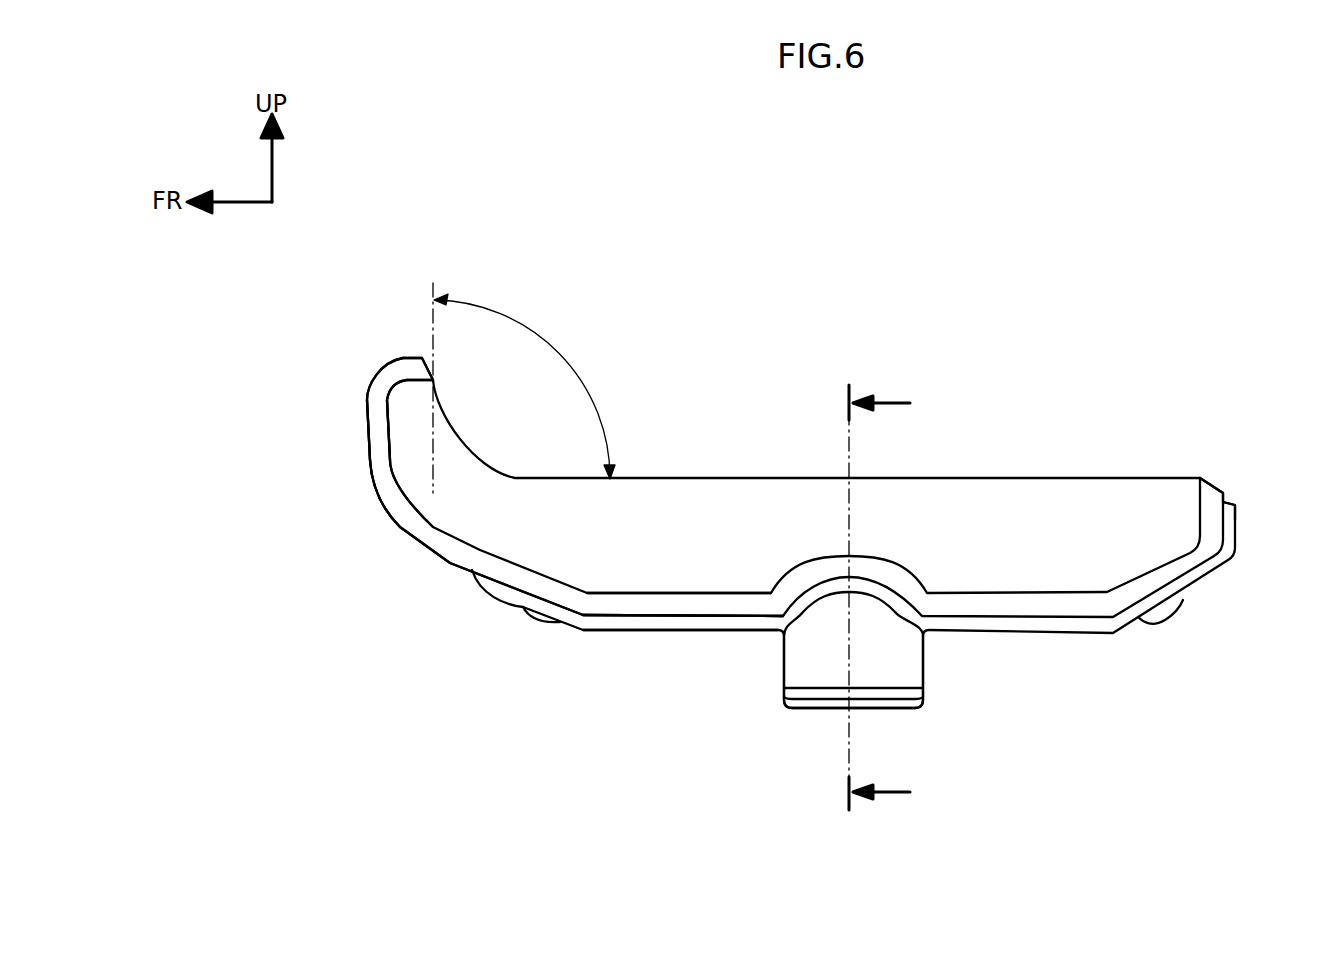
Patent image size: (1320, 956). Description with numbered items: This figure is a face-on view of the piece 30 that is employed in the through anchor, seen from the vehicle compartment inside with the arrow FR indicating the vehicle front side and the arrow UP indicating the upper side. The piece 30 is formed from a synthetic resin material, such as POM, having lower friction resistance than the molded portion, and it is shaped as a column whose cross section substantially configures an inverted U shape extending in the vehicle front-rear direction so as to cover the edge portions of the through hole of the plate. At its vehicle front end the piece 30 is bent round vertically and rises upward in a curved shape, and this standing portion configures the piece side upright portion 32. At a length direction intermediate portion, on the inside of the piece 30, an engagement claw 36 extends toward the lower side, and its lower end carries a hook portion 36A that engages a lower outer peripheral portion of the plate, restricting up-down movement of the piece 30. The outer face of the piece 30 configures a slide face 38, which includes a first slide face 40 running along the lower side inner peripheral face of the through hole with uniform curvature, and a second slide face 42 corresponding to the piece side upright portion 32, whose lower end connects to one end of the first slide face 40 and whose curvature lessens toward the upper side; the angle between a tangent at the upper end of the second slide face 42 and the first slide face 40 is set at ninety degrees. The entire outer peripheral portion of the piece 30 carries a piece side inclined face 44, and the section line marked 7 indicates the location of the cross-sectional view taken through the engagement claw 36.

The piece 30 is at (1152, 478).
The piece side upright portion 32 is at (407, 445).
The engagement claw 36 is at (907, 667).
The hook portion 36A is at (902, 712).
The slide face 38 is at (576, 538).
The first slide face 40 is at (673, 572).
The second slide face 42 is at (407, 397).
The piece side inclined face 44 is at (423, 360).
The section line 7- 7 is at (891, 597).